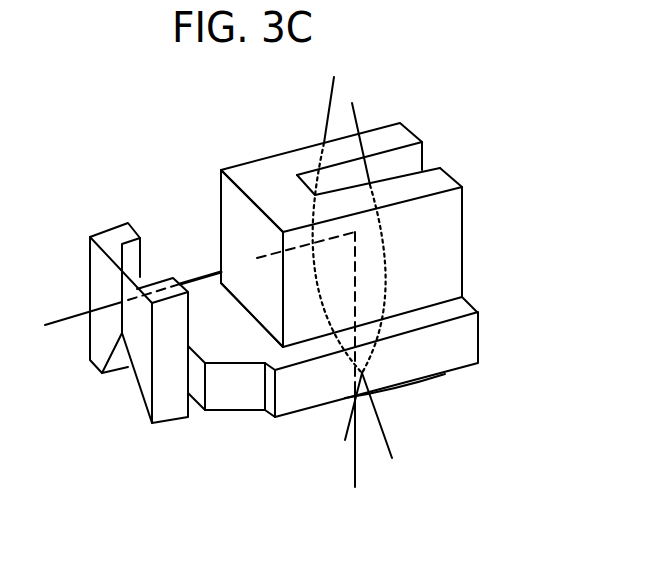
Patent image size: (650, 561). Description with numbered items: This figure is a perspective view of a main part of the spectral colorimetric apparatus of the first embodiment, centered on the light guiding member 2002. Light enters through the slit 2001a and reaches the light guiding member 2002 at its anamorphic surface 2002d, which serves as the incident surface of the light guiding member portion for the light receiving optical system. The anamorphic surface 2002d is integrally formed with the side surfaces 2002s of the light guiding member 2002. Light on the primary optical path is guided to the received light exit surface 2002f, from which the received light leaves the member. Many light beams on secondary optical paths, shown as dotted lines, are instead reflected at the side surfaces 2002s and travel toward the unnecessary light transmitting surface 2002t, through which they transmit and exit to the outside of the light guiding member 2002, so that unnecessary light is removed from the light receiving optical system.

The slit 2001a is at (172, 415).
The light guiding member 2002 is at (455, 347).
The side surfaces 2002s is at (387, 326).
The unnecessary light transmitting surface 2002t is at (387, 142).
The anamorphic surface 2002d is at (402, 385).
The received light exit surface 2002f is at (258, 282).